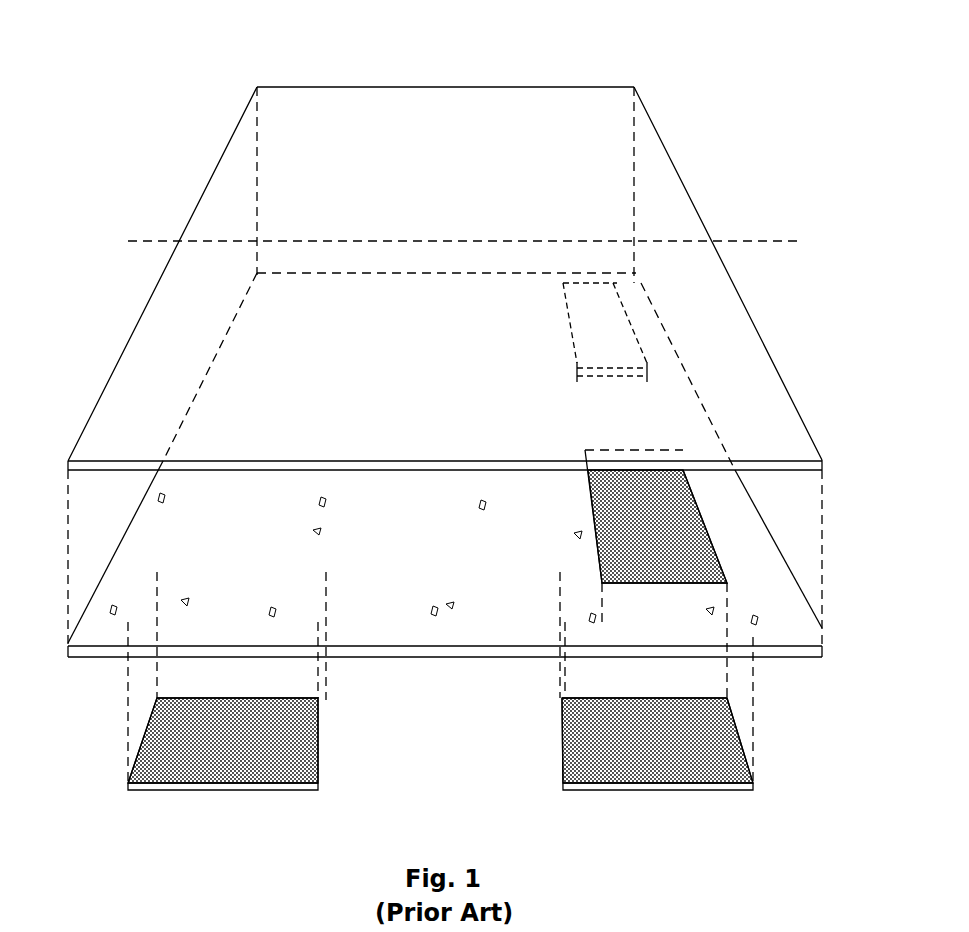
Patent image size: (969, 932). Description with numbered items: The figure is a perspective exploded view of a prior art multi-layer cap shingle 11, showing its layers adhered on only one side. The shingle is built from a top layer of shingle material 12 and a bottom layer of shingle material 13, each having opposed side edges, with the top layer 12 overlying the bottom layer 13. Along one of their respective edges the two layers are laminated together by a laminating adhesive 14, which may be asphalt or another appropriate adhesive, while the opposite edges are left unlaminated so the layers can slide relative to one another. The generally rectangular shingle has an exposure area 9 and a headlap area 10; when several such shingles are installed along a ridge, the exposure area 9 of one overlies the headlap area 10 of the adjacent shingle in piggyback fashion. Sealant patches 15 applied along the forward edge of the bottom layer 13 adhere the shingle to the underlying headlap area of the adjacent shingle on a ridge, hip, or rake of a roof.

The exposure area 9 is at (563, 392).
The headlap area 10 is at (267, 157).
The prior art multi-layer cap shingle 11 is at (140, 173).
The top layer of shingle material 12 is at (768, 402).
The bottom layer of shingle material 13 is at (783, 592).
The laminating adhesive 14 is at (613, 325).
The sealant patches 15 is at (203, 762).